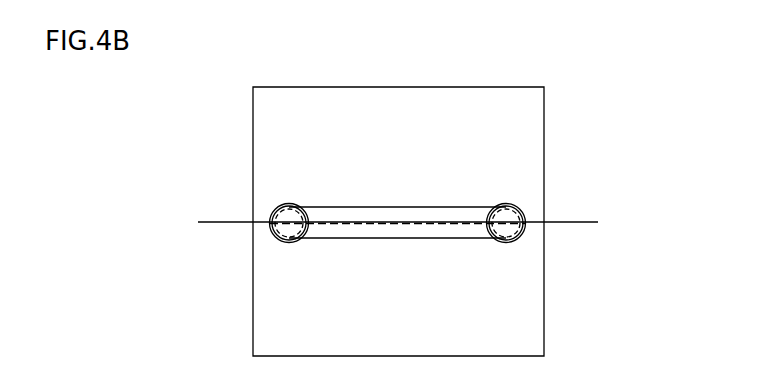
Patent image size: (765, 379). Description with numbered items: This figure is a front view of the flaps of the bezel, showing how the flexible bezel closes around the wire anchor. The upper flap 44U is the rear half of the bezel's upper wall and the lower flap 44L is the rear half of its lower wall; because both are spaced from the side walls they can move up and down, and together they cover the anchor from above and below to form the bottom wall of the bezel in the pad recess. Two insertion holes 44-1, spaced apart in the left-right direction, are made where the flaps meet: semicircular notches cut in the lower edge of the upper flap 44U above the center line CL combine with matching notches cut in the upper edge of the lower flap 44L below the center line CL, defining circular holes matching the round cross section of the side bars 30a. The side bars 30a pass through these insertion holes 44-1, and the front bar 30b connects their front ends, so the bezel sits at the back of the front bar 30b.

The upper flap 44U is at (512, 135).
The lower flap 44L is at (513, 320).
The insertion hole 44-1 is at (283, 237).
The side bar 30a is at (281, 208).
The front bar 30b is at (344, 232).
The center line CL is at (582, 222).